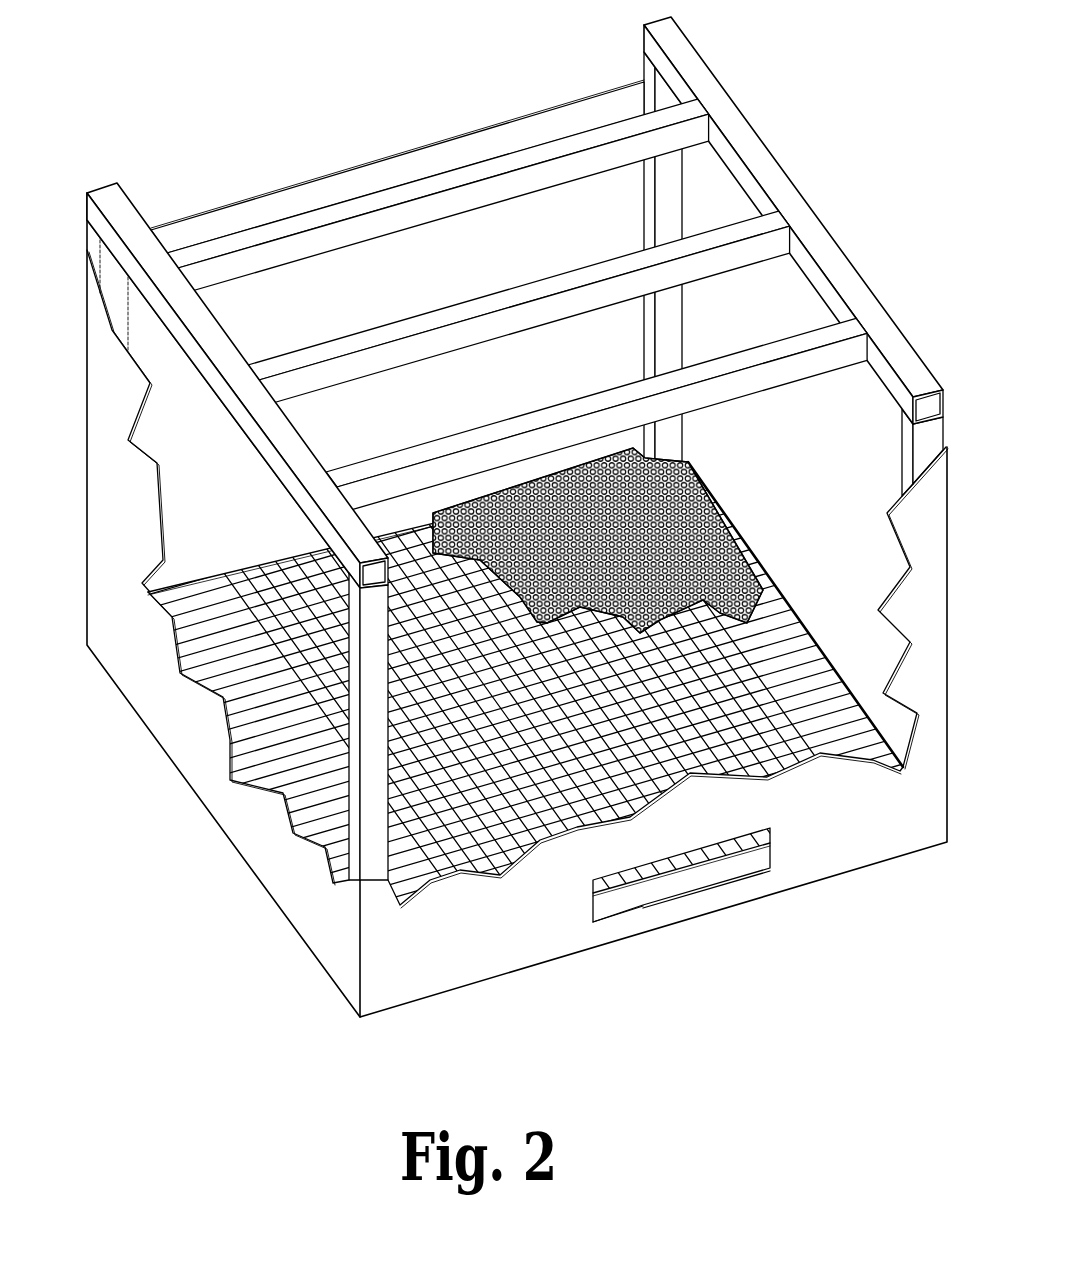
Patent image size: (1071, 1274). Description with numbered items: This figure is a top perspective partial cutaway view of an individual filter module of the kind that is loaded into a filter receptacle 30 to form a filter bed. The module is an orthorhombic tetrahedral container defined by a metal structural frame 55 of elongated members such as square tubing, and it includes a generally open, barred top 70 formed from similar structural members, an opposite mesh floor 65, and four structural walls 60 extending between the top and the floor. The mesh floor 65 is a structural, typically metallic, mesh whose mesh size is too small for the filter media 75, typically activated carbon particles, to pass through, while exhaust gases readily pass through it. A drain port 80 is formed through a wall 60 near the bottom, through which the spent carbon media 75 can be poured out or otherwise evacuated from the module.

The filter receptacle 30 is at (170, 986).
The structural frame 55 is at (759, 158).
The structural wall 60 is at (117, 521).
The mesh floor 65 is at (245, 742).
The barred top 70 is at (232, 85).
The filter media 75 is at (714, 522).
The drain port 80 is at (641, 900).